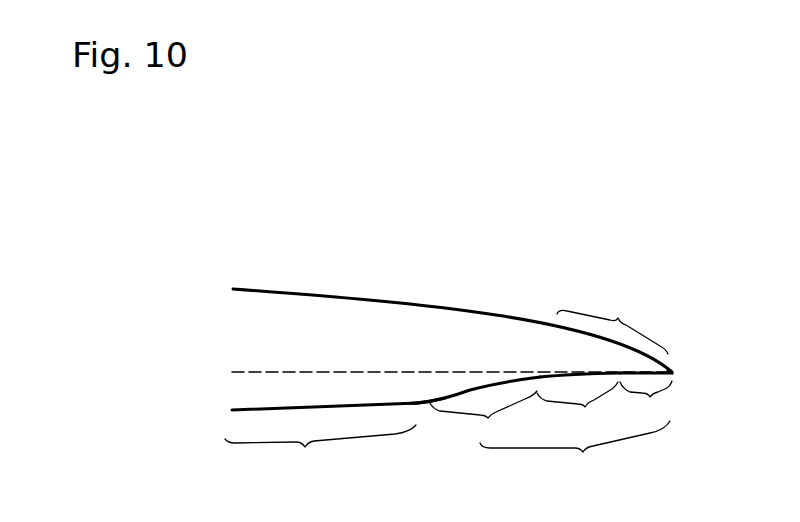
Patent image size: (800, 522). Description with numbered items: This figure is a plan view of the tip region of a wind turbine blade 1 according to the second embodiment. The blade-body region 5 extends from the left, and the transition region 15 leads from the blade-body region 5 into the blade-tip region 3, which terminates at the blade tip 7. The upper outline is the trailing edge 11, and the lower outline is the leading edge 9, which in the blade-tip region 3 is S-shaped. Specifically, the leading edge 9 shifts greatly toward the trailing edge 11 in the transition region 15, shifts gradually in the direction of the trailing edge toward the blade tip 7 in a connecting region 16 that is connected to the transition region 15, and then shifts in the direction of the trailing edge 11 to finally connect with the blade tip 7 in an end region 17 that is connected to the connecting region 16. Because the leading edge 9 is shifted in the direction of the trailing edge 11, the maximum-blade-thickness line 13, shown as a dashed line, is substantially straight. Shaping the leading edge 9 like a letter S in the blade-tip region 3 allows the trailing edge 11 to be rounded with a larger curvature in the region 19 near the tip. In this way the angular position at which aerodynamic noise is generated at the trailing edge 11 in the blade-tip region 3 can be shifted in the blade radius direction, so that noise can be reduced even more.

The wind turbine blade 1 is at (224, 269).
The blade-tip region 3 is at (545, 427).
The blade-body region 5 is at (321, 438).
The blade tip 7 is at (674, 370).
The leading edge 9 is at (421, 405).
The trailing edge 11 is at (364, 299).
The maximum-blade-thickness line 13 is at (310, 370).
The transition region 15 is at (479, 411).
The connecting region 16 is at (578, 402).
The end region 17 is at (646, 397).
The region 19 is at (612, 323).